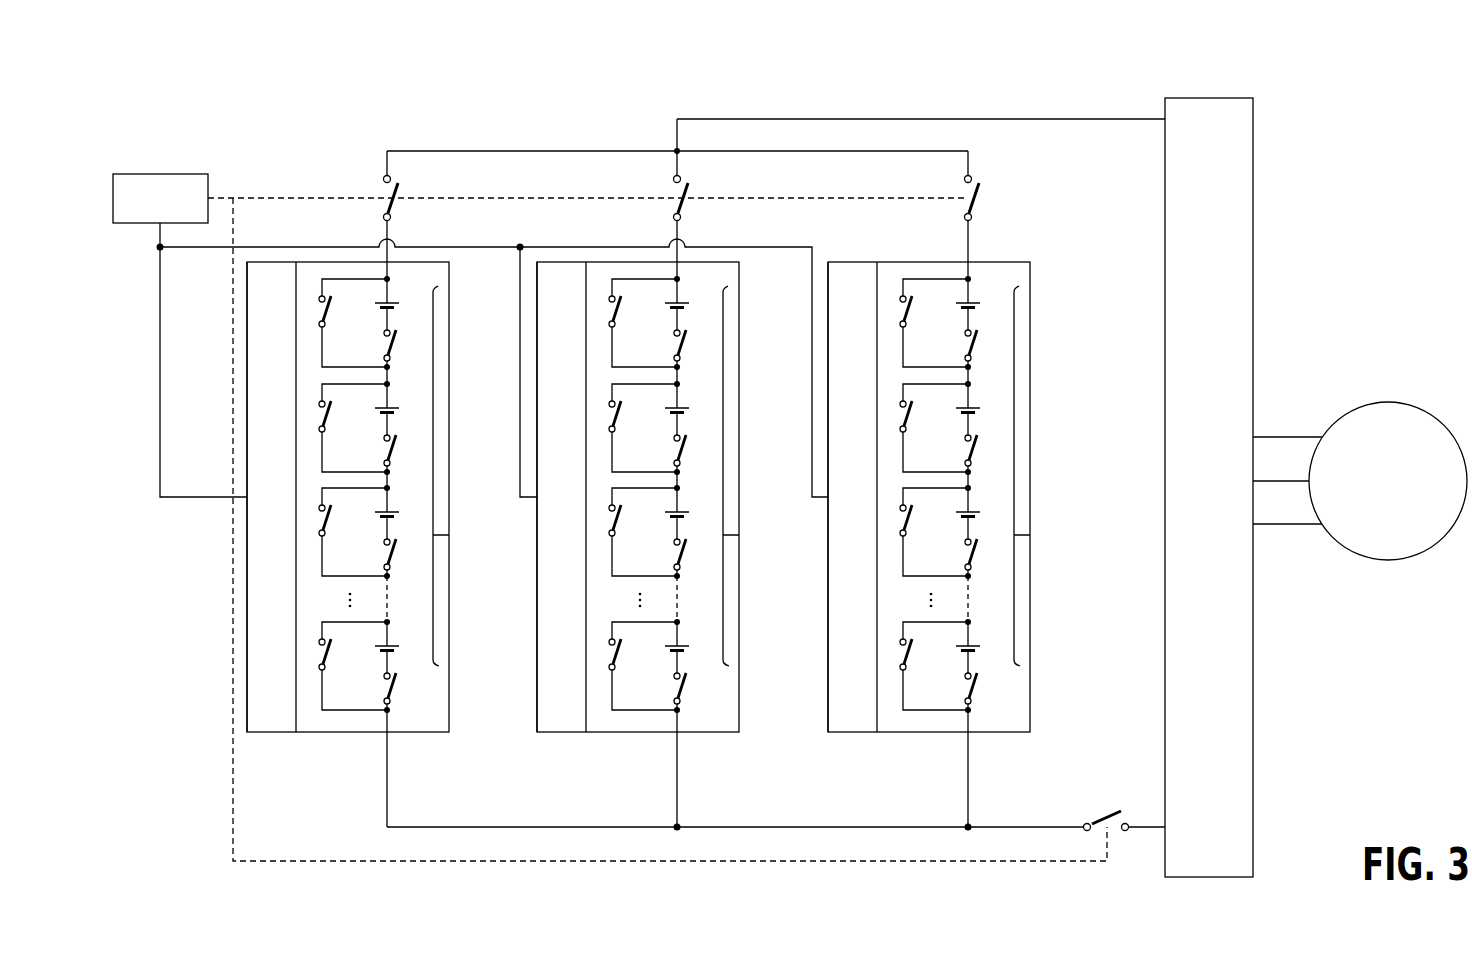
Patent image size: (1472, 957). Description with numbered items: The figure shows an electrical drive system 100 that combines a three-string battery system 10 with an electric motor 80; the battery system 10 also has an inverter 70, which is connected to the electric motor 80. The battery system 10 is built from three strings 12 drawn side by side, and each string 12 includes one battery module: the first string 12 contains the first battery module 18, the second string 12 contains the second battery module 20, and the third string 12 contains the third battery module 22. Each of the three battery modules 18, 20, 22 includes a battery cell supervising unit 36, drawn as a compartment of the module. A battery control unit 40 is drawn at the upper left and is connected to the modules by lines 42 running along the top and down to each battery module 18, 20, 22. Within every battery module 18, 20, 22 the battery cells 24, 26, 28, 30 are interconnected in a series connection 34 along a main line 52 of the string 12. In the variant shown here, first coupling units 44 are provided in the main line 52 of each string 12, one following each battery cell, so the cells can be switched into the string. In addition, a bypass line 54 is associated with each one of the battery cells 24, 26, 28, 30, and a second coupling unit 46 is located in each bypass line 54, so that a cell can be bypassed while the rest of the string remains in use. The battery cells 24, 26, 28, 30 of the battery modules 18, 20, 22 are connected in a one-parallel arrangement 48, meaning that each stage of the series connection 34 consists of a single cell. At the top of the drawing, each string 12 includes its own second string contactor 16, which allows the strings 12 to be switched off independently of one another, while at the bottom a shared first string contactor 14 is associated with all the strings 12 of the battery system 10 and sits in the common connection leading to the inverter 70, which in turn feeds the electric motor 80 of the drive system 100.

The battery system 10 is at (318, 130).
The string 12 is at (609, 522).
The first string contactor 14 is at (1102, 815).
The second string contactor 16 is at (394, 207).
The first battery module 18 is at (307, 278).
The second battery module 20 is at (597, 278).
The third battery module 22 is at (887, 278).
The battery cell 24 is at (723, 305).
The battery cell 26 is at (723, 408).
The battery cell 28 is at (723, 513).
The battery cell 30 is at (723, 648).
The series connection 34 is at (449, 535).
The battery cell supervising unit 36 is at (258, 718).
The battery control unit 40 is at (162, 193).
The control line 42 is at (160, 366).
The first coupling unit 44 is at (727, 523).
The second coupling unit 46 is at (325, 312).
The 1p arrangement 48 is at (325, 586).
The main line 52 is at (387, 632).
The bypass line 54 is at (322, 562).
The inverter 70 is at (1233, 835).
The electric motor 80 is at (1393, 548).
The electrical drive system 100 is at (1340, 112).